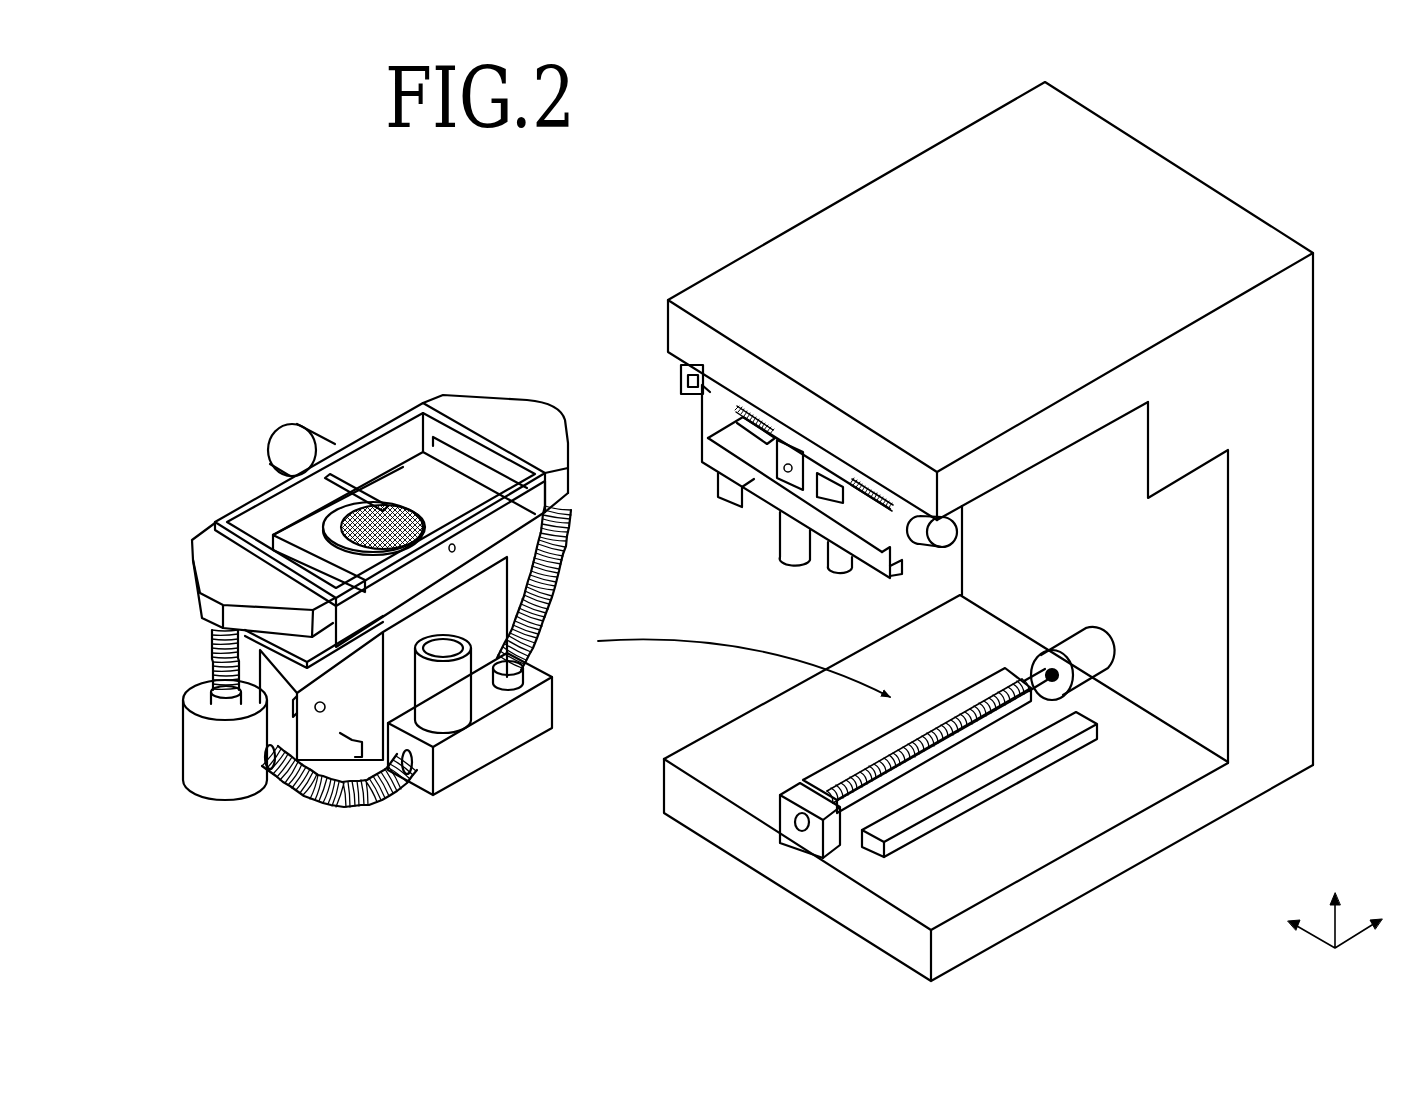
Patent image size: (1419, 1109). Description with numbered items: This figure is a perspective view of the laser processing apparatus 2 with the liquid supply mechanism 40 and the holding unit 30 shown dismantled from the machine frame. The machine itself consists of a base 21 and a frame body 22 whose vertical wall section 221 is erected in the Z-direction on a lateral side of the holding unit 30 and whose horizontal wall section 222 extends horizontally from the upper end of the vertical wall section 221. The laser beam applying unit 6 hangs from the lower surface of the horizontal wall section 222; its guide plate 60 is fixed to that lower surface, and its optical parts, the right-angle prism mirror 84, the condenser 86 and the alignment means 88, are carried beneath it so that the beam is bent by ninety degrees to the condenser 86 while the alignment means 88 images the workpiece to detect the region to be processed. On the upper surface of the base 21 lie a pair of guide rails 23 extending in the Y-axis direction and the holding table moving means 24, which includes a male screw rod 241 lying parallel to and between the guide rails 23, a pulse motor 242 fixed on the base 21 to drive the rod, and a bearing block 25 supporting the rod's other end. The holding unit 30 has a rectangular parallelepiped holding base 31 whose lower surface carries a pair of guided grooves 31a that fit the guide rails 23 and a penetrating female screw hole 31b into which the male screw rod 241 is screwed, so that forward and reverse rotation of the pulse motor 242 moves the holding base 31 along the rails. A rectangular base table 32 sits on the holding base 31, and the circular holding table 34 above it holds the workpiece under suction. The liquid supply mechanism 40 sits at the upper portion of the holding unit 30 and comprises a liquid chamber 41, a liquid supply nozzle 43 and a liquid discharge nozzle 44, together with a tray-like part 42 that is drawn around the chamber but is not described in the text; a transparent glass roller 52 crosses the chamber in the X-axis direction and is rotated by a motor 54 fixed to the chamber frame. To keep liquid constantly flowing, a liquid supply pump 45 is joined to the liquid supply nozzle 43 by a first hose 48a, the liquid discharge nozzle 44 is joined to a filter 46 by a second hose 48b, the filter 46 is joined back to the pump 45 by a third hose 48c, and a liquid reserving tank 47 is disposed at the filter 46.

The laser processing apparatus 2 is at (1032, 531).
The laser beam applying unit 6 is at (797, 481).
The base 21 is at (1133, 785).
The frame body 22 is at (990, 423).
The vertical wall section 221 is at (1247, 516).
The horizontal wall section 222 is at (1037, 448).
The guide rails 23 is at (849, 770).
The holding table moving means 24 is at (1027, 709).
The male screw rod 241 is at (1036, 688).
The pulse motor 242 is at (1095, 648).
The bearing block 25 is at (810, 838).
The holding unit 30 is at (431, 660).
The holding base 31 is at (495, 615).
The guided grooves 31a is at (298, 700).
The female screw hole 31b is at (322, 702).
The base table 32 is at (307, 647).
The holding table 34 is at (412, 493).
The liquid supply mechanism 40 is at (387, 607).
The liquid chamber 41 is at (527, 500).
The tray 42 is at (410, 435).
The liquid supply nozzle 43 is at (208, 543).
The liquid discharge nozzle 44 is at (558, 447).
The liquid supply pump 45 is at (197, 747).
The filter 46 is at (498, 743).
The liquid reserving tank 47 is at (455, 707).
The first hose 48a is at (210, 662).
The second hose 48b is at (568, 552).
The third hose 48c is at (360, 797).
The roller 52 is at (353, 488).
The motor 54 is at (285, 448).
The guide plate 60 is at (700, 393).
The right-angle prism mirror 84 is at (725, 496).
The condenser 86 is at (790, 540).
The alignment means 88 is at (843, 565).